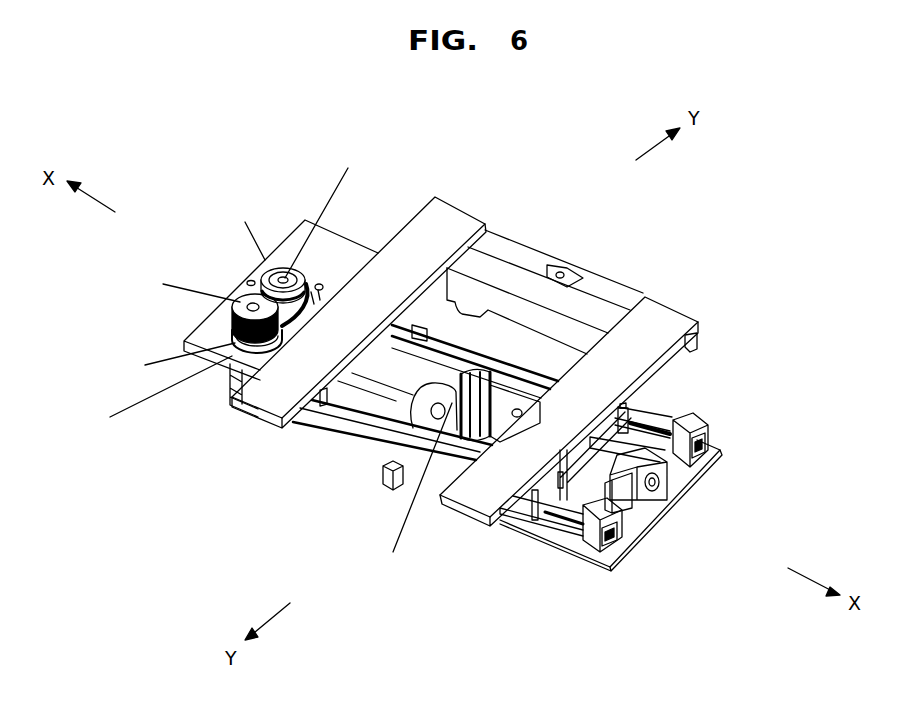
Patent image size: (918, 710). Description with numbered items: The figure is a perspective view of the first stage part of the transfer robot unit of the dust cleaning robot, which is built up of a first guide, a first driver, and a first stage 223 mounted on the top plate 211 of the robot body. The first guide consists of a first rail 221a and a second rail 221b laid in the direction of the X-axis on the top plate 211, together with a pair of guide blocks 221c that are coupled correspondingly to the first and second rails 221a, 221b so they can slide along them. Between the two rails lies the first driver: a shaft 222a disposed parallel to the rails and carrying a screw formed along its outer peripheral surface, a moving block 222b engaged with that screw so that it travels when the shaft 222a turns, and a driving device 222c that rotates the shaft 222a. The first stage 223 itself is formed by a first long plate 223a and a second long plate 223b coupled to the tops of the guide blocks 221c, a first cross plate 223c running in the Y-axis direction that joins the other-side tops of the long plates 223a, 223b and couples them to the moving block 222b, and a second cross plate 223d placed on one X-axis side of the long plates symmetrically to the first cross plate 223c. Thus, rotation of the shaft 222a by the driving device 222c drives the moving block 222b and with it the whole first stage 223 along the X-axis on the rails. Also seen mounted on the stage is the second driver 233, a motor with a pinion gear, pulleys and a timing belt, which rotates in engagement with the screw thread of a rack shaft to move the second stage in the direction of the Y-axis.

The top plate 211 is at (627, 547).
The first rail 221a is at (693, 423).
The second rail 221b is at (578, 522).
The guide blocks 221c is at (650, 407).
The shaft 222a is at (660, 463).
The moving block 222b is at (612, 490).
The driving device 222c is at (436, 422).
The first stage 223 is at (730, 311).
The first long plate 223a is at (505, 332).
The second long plate 223b is at (353, 402).
The first cross plate 223c is at (657, 322).
The second cross plate 223d is at (437, 228).
The second driver 233 is at (226, 287).